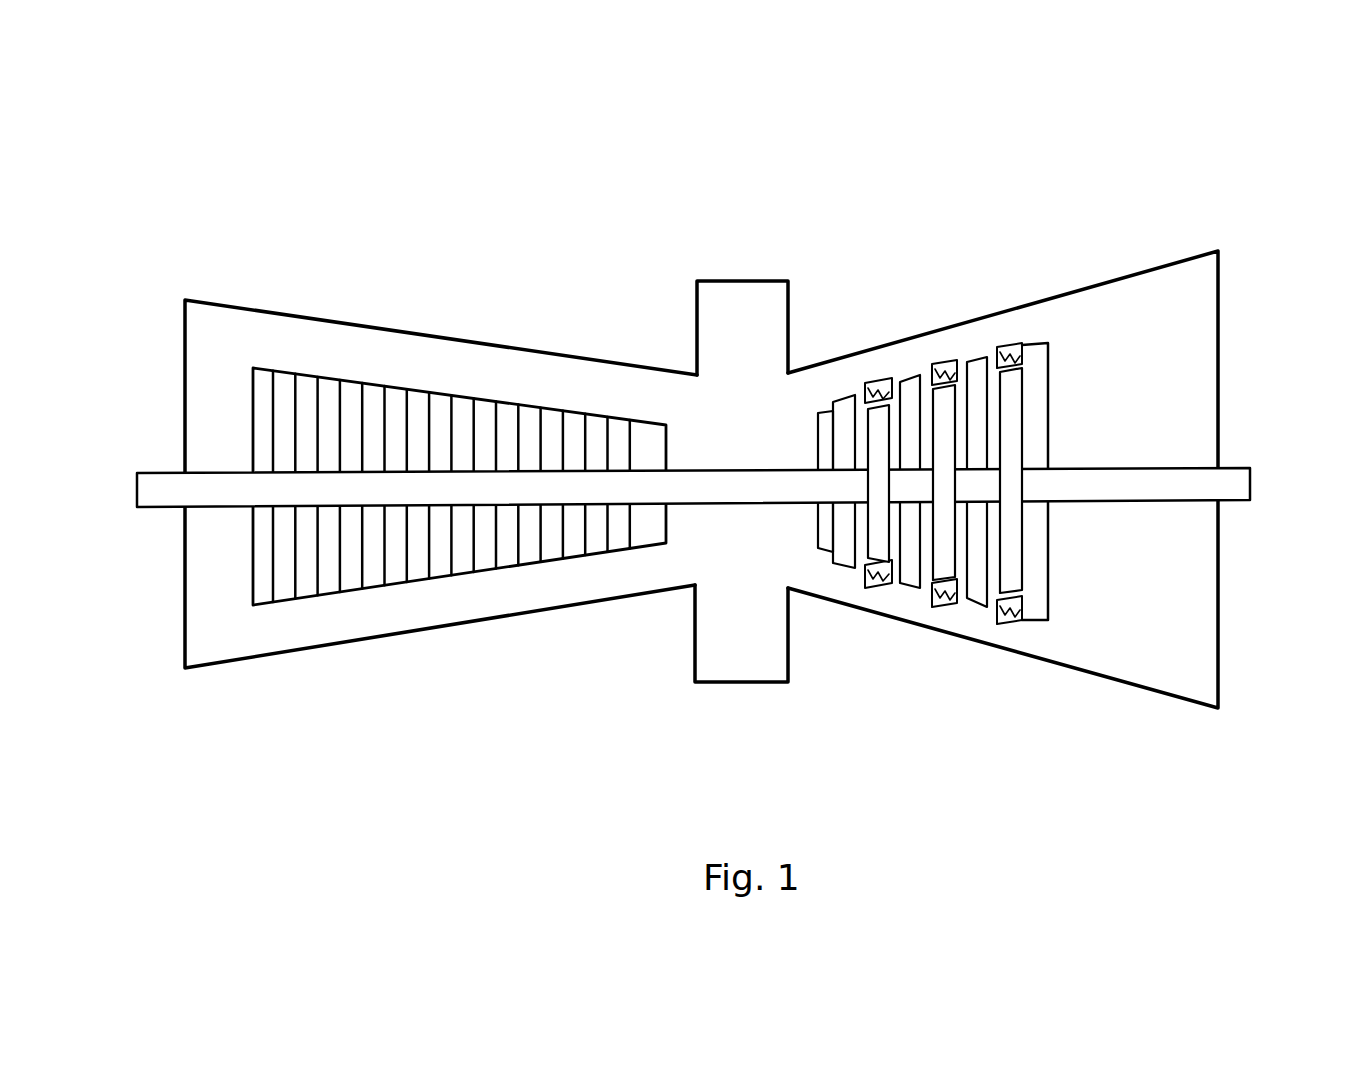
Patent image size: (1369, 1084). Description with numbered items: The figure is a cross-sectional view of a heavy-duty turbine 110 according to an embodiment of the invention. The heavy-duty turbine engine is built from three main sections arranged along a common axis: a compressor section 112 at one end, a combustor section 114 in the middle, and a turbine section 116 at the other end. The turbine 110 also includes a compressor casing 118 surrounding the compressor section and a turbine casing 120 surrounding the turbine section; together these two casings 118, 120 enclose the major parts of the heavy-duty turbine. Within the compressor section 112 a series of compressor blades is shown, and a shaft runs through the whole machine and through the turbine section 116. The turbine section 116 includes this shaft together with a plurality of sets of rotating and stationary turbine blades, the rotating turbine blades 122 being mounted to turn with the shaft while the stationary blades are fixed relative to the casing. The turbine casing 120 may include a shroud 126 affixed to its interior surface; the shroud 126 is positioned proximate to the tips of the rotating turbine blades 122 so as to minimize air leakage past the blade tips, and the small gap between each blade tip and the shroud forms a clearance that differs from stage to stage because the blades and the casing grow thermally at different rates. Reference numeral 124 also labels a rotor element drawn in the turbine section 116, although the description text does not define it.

The heavy-duty turbine 110 is at (704, 438).
The compressor section 112 is at (337, 398).
The combustor section 114 is at (712, 549).
The turbine section 116 is at (751, 504).
The compressor casing 118 is at (370, 413).
The turbine casing 120 is at (751, 471).
The rotating turbine blades 122 is at (876, 520).
The rotor 124 is at (975, 580).
The shroud 126 is at (938, 593).